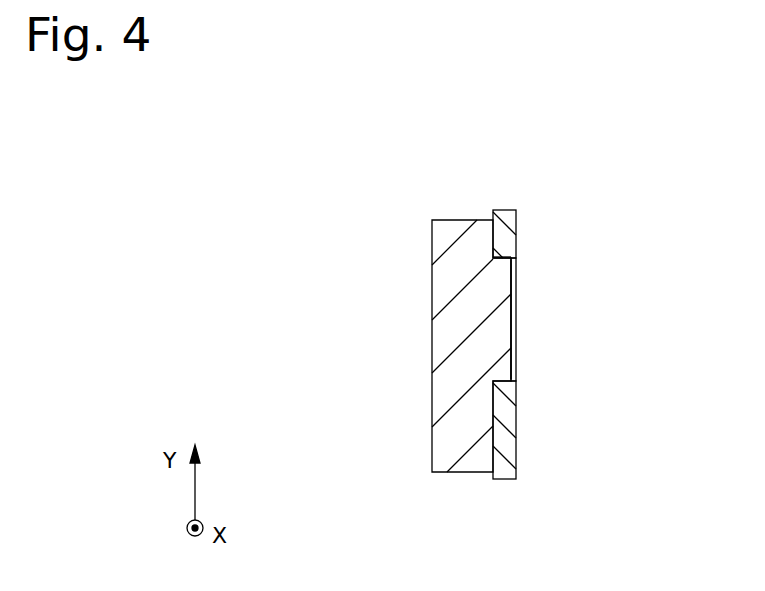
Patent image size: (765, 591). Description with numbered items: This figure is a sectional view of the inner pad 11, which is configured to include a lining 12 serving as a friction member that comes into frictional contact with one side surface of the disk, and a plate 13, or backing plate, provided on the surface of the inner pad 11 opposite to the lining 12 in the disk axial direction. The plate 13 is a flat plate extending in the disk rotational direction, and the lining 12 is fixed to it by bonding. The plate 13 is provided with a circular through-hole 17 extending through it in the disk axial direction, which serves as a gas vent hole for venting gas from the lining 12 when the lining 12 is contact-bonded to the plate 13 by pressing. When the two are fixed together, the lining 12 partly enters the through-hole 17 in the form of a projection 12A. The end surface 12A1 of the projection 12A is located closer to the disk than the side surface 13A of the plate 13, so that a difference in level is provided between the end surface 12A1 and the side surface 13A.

The inner pad 11 is at (479, 181).
The lining 12 is at (442, 228).
The projection 12A is at (490, 332).
The end surface 12A1 is at (509, 280).
The plate 13 is at (497, 230).
The side surface 13A is at (510, 408).
The through-hole 17 is at (492, 248).